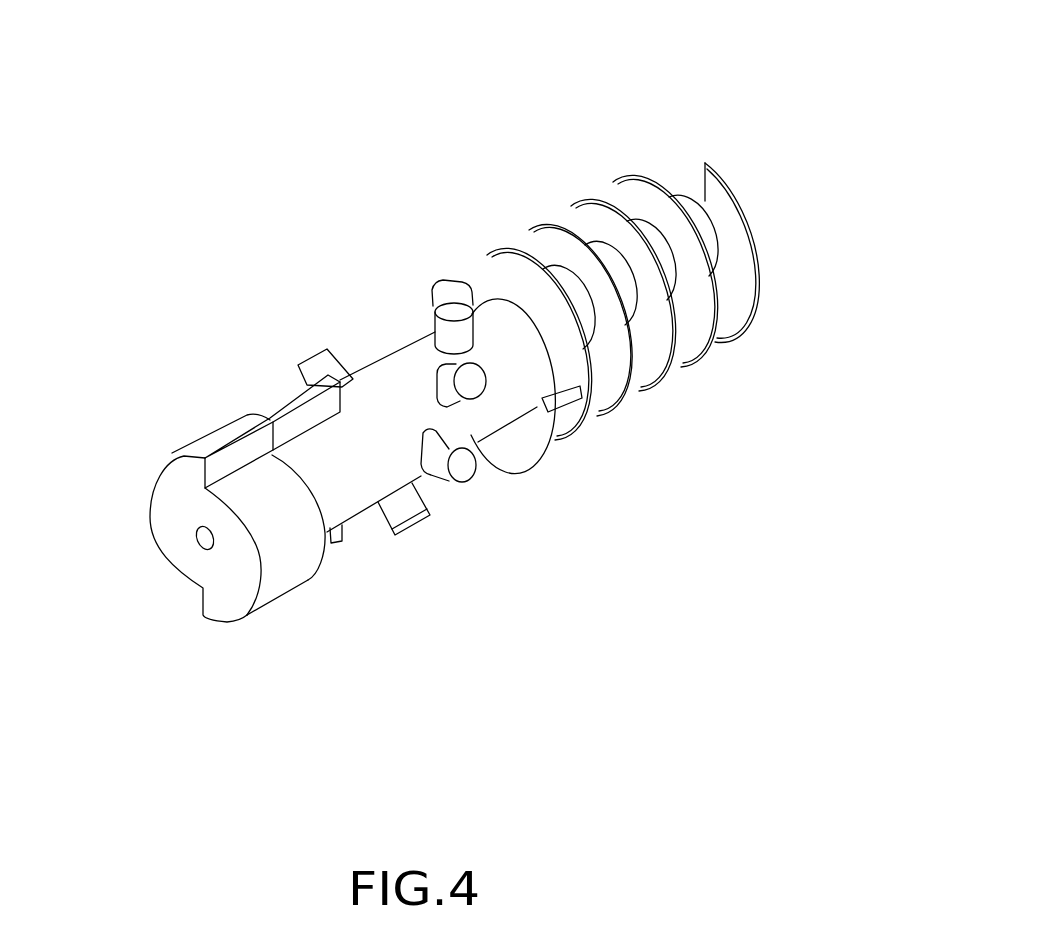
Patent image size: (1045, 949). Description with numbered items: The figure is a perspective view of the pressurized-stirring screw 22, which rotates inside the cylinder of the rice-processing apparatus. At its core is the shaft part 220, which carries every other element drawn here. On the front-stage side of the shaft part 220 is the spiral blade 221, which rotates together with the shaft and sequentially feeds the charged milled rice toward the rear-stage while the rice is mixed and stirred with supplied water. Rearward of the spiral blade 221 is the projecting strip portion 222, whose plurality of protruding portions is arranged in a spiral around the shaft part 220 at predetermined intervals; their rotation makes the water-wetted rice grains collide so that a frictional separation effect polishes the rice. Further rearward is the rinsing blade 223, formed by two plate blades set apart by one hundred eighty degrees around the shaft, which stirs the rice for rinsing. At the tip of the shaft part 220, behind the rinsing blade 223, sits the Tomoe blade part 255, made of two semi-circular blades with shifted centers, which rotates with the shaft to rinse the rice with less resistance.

The pressurized-stirring screw 22 is at (673, 108).
The shaft part 220 is at (405, 383).
The spiral blade 221 is at (647, 365).
The projecting strip portion 222 is at (318, 357).
The rinsing blade 223 is at (280, 407).
The Tomoe blade part 255 is at (241, 604).